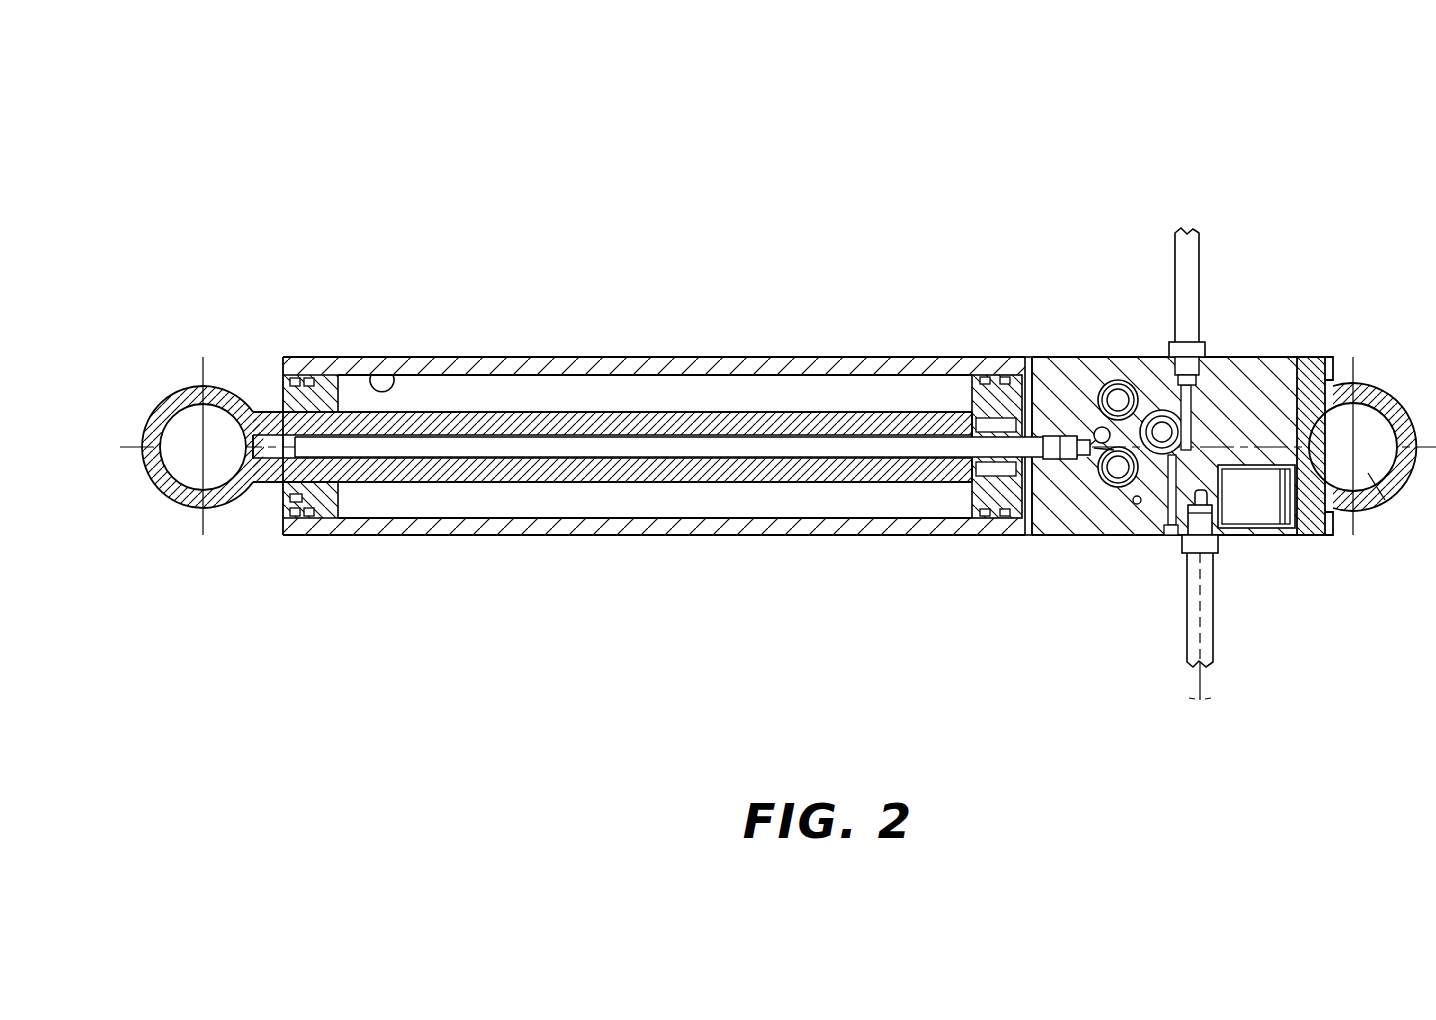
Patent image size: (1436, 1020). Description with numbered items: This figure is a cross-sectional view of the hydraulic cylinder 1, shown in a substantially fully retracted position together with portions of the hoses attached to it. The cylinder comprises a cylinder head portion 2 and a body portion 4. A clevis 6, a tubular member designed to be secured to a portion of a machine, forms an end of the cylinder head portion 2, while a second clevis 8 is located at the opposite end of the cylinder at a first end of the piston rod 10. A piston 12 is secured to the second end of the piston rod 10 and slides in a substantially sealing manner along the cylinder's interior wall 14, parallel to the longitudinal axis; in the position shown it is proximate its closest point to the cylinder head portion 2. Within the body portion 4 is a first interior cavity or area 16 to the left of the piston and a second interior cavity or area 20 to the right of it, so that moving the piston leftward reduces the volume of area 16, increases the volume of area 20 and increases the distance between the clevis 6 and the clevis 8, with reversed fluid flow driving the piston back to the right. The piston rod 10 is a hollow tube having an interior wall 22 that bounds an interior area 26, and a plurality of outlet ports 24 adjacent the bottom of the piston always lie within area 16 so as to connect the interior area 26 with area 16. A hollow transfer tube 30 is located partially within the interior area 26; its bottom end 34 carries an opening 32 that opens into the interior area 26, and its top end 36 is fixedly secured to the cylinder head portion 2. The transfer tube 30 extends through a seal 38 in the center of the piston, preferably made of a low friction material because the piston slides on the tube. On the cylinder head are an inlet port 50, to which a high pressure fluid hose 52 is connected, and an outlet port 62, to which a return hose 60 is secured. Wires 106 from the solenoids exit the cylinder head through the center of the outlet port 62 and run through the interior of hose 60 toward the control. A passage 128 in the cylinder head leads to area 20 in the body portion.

The hydraulic cylinder 1 is at (778, 395).
The cylinder head portion 2 is at (1272, 355).
The body portion 4 is at (612, 556).
The clevis 6 is at (1389, 397).
The second clevis 8 is at (211, 393).
The piston rod 10 is at (882, 412).
The piston 12 is at (995, 403).
The interior wall 14 is at (391, 385).
The first interior cavity or area 16 is at (573, 393).
The second interior cavity or area 20 is at (1033, 470).
The interior wall 22 is at (435, 435).
The outlet ports 24 is at (960, 428).
The interior area 26 is at (483, 440).
The transfer tube 30 is at (666, 445).
The opening 32 is at (297, 456).
The bottom end 34 is at (305, 462).
The top end 36 is at (1070, 443).
The seal 38 is at (1040, 440).
The inlet port 50 is at (1200, 370).
The high pressure fluid hose 52 is at (1187, 255).
The exterior hose 60 is at (1190, 630).
The outlet port 62 is at (1212, 510).
The wires 106 is at (1200, 642).
The passage 128 is at (1040, 468).